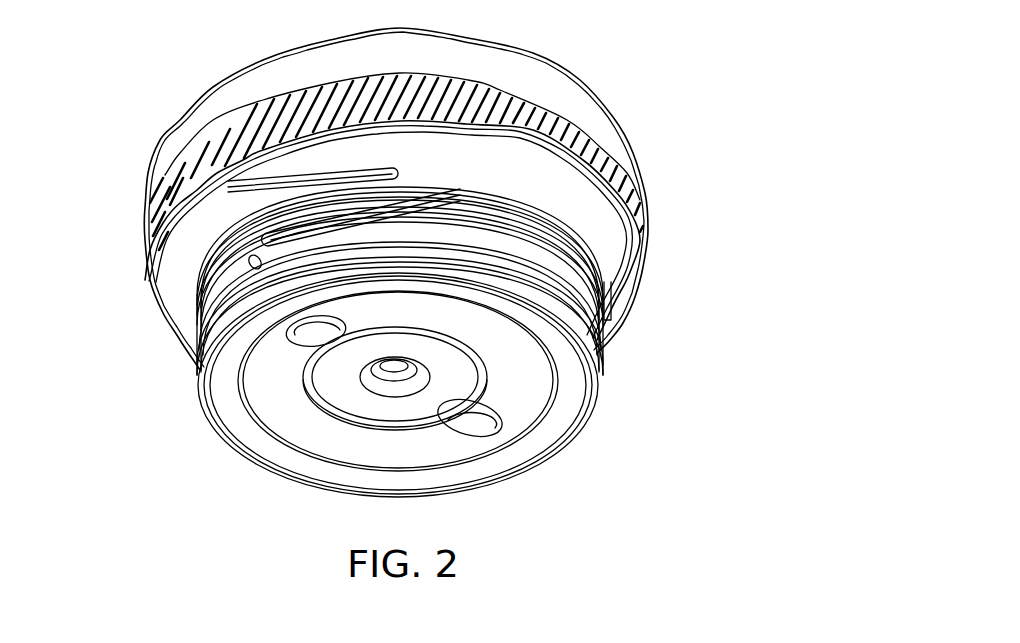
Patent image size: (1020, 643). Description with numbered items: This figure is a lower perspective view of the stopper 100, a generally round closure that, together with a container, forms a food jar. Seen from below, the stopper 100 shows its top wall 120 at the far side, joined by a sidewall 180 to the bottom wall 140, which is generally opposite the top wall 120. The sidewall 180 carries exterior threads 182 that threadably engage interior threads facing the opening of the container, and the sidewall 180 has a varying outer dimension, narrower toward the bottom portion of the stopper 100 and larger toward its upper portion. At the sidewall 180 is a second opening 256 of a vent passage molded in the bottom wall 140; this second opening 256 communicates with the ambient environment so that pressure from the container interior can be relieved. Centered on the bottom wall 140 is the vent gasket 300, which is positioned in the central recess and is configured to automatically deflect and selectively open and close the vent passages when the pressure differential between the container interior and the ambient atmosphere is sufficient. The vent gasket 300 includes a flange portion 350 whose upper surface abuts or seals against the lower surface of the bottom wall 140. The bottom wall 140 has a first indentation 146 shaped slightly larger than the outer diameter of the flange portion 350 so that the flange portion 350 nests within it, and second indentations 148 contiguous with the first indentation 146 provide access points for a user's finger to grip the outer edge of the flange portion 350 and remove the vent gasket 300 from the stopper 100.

The stopper 100 is at (686, 135).
The top wall 120 is at (531, 57).
The sidewall 180 is at (563, 226).
The exterior threads 182 is at (248, 266).
The second opening 256 is at (200, 305).
The bottom wall 140 is at (533, 390).
The first indentation 146 is at (483, 353).
The second indentations 148 is at (487, 423).
The vent gasket 300 is at (363, 410).
The flange portion 350 is at (408, 413).